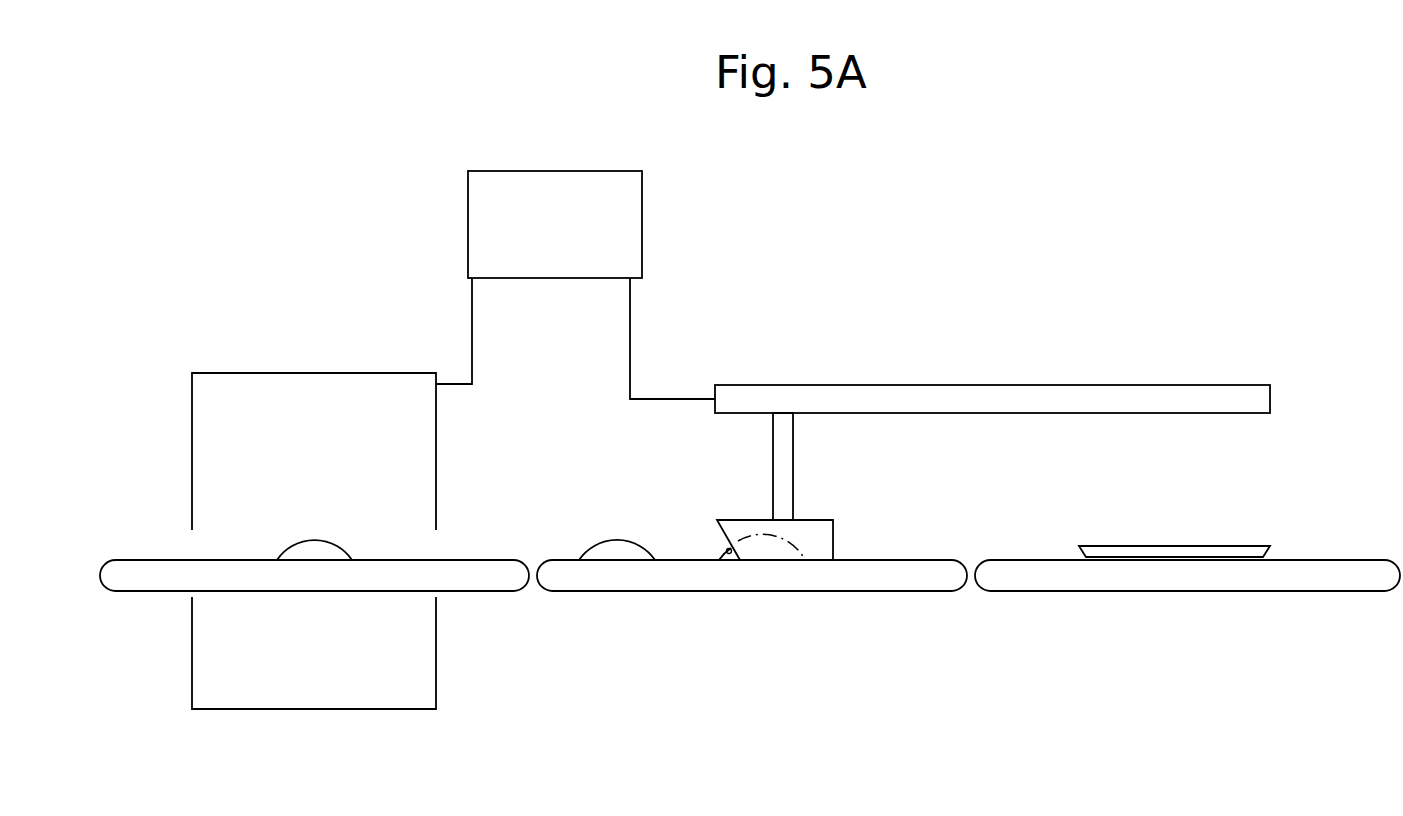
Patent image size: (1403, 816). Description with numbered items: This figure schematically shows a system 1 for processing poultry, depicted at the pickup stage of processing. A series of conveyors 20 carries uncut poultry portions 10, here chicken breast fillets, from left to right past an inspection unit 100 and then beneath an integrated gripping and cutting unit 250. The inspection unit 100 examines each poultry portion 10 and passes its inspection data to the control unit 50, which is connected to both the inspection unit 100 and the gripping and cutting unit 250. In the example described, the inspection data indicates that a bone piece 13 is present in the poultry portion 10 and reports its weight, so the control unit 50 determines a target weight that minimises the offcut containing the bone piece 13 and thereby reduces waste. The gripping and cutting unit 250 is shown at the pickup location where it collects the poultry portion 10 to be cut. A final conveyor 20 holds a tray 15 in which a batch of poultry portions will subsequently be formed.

The system 1 is at (1075, 238).
The poultry portion 10 is at (305, 540).
The bone piece 13 is at (727, 548).
The tray 15 is at (1235, 553).
The conveyor 20 is at (253, 592).
The control unit 50 is at (510, 170).
The inspection unit 100 is at (257, 372).
The integrated gripping and cutting unit 250 is at (803, 475).